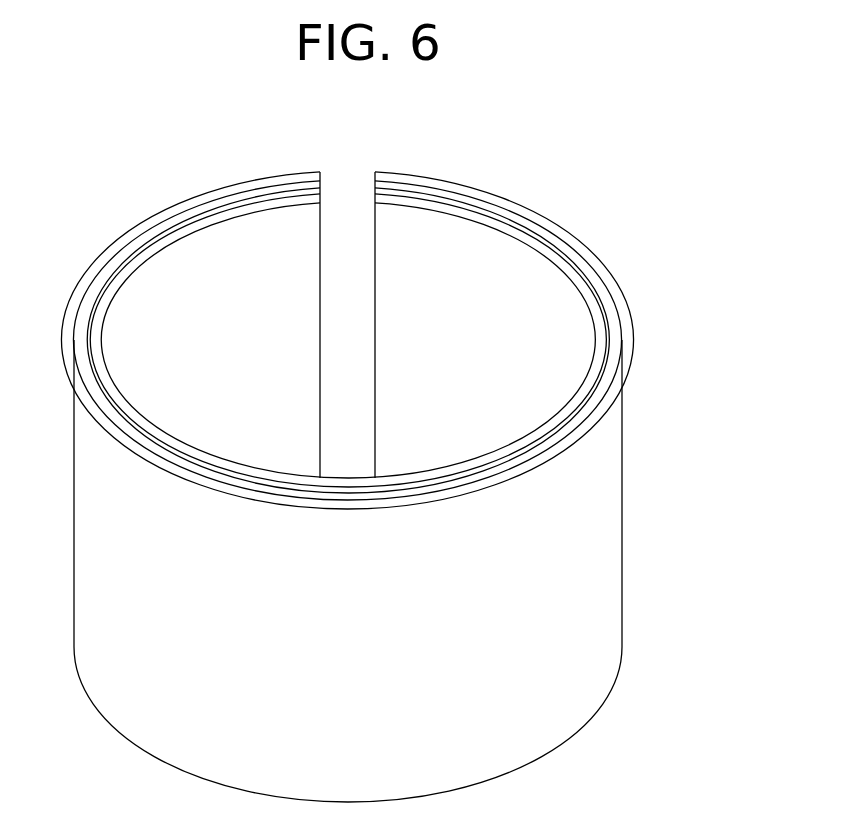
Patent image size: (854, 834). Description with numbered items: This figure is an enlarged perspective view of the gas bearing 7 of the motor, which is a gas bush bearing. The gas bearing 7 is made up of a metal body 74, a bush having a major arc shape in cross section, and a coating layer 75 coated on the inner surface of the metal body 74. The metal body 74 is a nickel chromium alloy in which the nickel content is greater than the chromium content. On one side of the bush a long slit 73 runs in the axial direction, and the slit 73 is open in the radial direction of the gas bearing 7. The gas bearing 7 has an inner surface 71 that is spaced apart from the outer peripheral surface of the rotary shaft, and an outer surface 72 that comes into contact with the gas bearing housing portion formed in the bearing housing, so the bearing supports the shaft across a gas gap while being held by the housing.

The gas bearing 7 is at (632, 176).
The inner surface 71 is at (159, 302).
The outer surface 72 is at (614, 460).
The slit 73 is at (355, 235).
The metal body 74 is at (607, 270).
The coating layer 75 is at (573, 270).